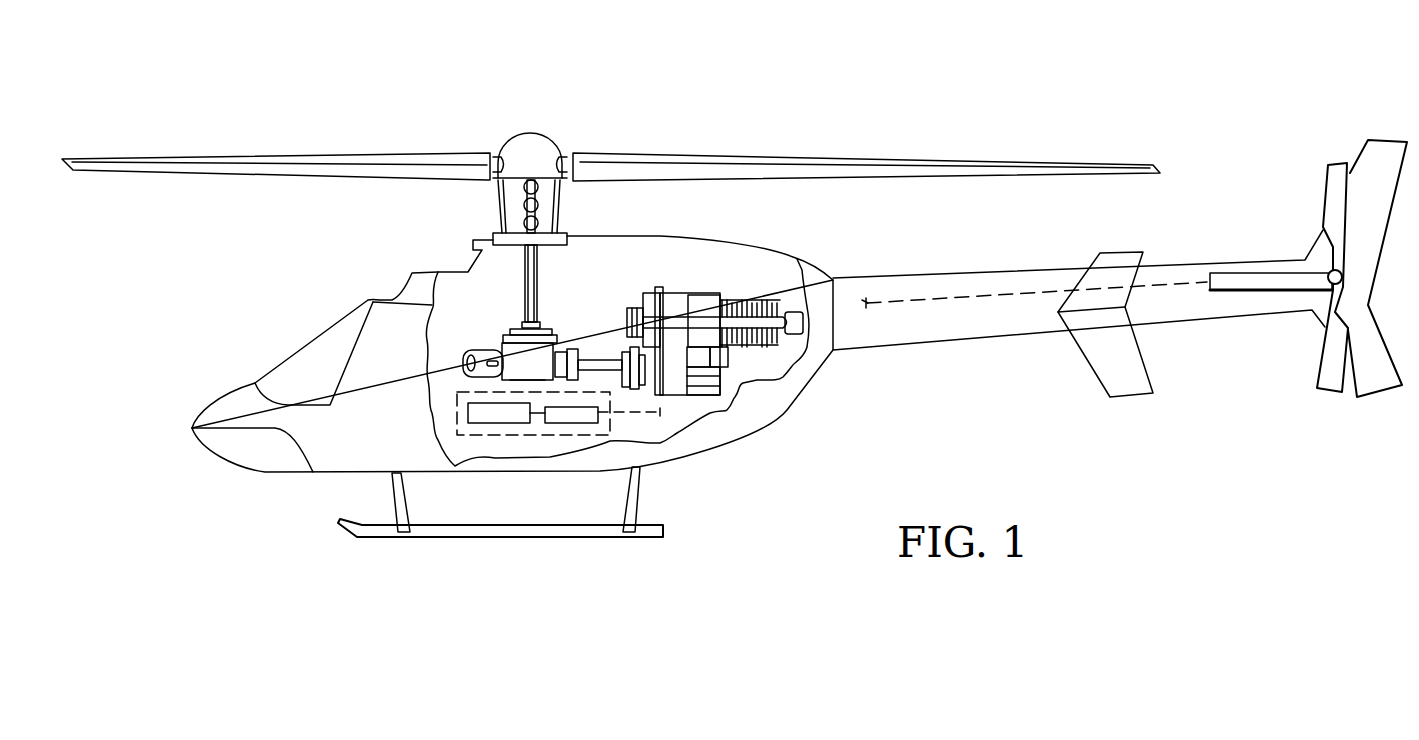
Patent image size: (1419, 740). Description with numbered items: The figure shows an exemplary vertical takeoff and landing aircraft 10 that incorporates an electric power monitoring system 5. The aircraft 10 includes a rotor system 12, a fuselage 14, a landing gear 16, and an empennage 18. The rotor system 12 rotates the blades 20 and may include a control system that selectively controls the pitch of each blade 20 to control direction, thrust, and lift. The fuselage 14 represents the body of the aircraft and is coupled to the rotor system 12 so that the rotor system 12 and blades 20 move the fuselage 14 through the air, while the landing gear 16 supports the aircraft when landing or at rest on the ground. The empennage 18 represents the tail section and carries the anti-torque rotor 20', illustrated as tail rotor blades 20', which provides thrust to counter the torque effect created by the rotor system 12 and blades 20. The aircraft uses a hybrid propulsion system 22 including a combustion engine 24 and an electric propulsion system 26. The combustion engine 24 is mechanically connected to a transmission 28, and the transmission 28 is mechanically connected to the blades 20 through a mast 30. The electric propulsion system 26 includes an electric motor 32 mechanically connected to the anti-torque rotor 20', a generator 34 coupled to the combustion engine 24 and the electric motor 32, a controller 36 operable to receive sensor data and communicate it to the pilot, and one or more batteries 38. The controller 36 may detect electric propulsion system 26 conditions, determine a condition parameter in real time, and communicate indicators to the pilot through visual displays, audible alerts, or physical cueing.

The electric power monitoring system 5 is at (758, 84).
The vertical takeoff and landing aircraft 10 is at (781, 430).
The rotor system 12 is at (580, 205).
The fuselage 14 is at (289, 477).
The landing gear 16 is at (455, 538).
The empennage 18 is at (963, 338).
The blades 20 is at (611, 140).
The anti-torque rotor 20' is at (1330, 268).
The hybrid propulsion system 22 is at (688, 258).
The combustion engine 24 is at (723, 300).
The electric propulsion system 26 is at (446, 402).
The transmission 28 is at (561, 333).
The mast 30 is at (541, 286).
The electric motor 32 is at (1271, 273).
The generator 34 is at (487, 350).
The controller 36 is at (505, 425).
The batteries 38 is at (571, 424).